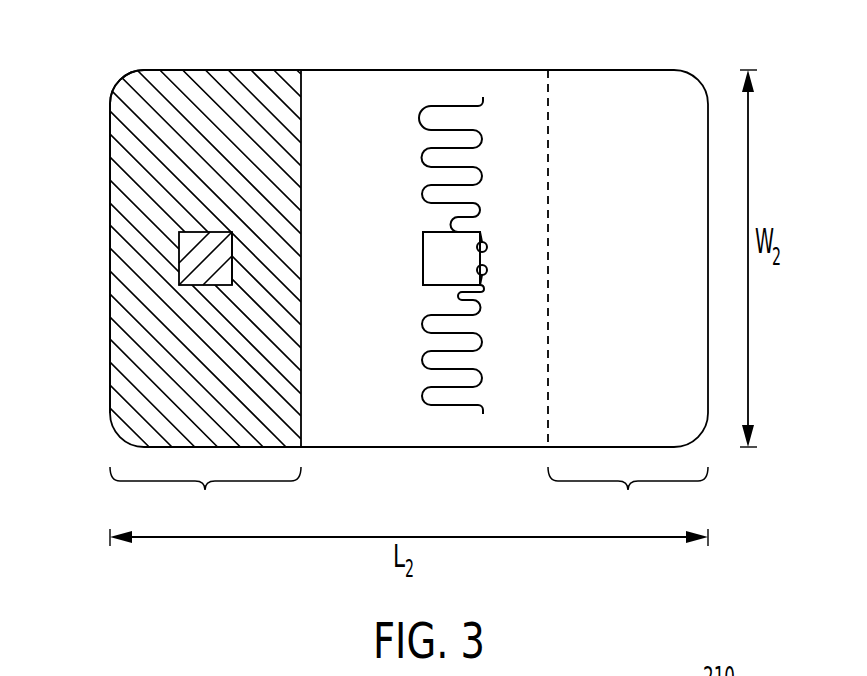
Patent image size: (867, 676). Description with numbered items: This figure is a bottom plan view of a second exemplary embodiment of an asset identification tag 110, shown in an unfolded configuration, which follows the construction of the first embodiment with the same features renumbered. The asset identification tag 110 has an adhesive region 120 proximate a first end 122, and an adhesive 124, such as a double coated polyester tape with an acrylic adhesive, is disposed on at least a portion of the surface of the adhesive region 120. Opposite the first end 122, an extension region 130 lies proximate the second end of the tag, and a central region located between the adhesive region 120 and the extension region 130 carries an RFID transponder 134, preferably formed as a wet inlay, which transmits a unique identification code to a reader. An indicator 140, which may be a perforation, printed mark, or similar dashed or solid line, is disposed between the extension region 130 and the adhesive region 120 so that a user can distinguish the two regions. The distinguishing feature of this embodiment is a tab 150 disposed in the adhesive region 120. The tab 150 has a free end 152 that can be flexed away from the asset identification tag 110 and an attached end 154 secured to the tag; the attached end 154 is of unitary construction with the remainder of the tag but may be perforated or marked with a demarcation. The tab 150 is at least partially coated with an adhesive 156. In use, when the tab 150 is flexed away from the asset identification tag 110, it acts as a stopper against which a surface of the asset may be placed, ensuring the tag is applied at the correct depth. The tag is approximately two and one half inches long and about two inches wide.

The asset identification tag 110 is at (760, 93).
The adhesive region 120 is at (205, 300).
The first end 122 is at (110, 172).
The adhesive 124 is at (135, 98).
The extension region 130 is at (628, 498).
The RFID transponder 134 is at (447, 106).
The indicator 140 is at (542, 98).
The tab 150 is at (212, 183).
The free end 152 is at (180, 258).
The attached end 154 is at (233, 270).
The adhesive 156 is at (205, 242).